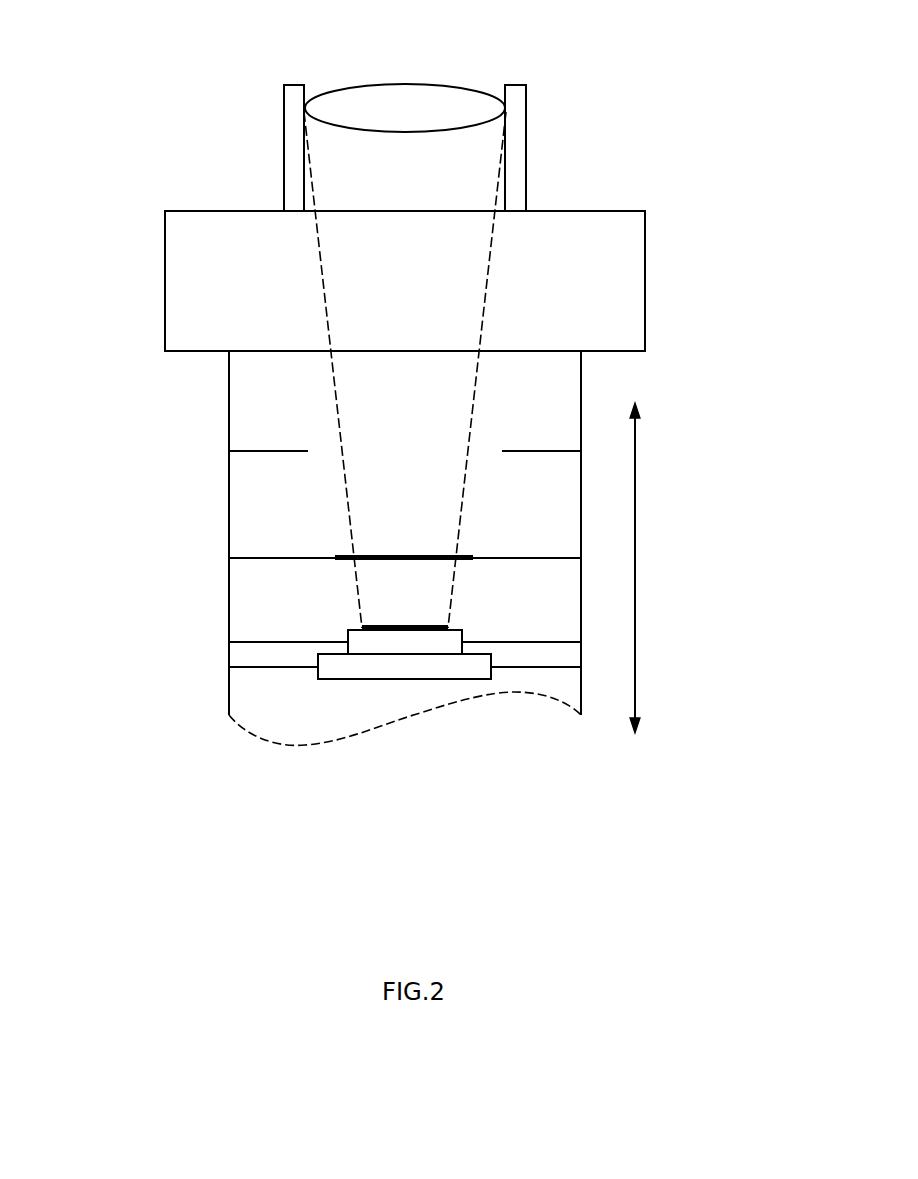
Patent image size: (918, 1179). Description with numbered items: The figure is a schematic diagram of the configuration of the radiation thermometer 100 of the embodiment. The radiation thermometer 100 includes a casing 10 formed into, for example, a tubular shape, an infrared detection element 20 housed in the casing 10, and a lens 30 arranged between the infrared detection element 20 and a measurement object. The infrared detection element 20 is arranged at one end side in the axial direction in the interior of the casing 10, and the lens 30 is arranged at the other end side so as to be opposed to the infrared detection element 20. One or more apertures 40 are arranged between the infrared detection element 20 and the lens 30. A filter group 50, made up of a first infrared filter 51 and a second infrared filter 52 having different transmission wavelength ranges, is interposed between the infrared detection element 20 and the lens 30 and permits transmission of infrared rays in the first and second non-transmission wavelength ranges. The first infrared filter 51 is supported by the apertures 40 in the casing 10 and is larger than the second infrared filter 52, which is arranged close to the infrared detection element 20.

The radiation thermometer 100 is at (136, 106).
The casing 10 is at (229, 400).
The lens 30 is at (408, 86).
The apertures 40 is at (541, 450).
The filter group 50 is at (452, 500).
The first infrared filter 51 is at (428, 558).
The second infrared filter 52 is at (395, 628).
The infrared detection element 20 is at (462, 640).